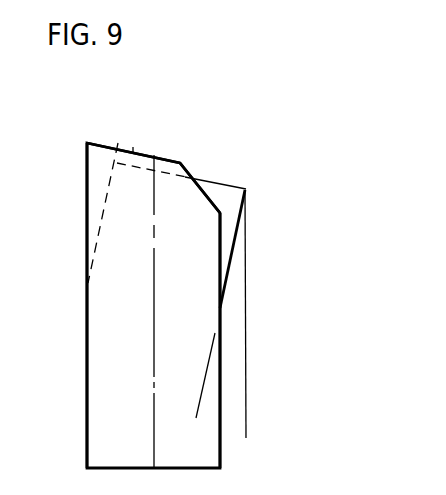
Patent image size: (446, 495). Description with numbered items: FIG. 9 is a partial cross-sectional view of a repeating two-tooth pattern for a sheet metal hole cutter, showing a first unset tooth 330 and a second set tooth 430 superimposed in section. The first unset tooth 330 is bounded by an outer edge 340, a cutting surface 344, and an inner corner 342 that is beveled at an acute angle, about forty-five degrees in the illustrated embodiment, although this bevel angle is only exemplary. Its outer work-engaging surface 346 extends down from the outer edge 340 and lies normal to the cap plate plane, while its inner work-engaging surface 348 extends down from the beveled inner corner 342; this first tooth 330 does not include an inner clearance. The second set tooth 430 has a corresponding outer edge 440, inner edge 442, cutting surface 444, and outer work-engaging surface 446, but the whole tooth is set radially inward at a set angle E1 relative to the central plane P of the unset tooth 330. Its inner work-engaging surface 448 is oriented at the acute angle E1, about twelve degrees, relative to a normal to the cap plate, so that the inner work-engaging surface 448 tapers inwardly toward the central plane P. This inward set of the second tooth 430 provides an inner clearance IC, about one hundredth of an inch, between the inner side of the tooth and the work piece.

The first unset tooth 330 is at (156, 149).
The outer edge 340 is at (87, 143).
The inner corner 342 is at (182, 160).
The cutting surface 344 is at (133, 150).
The outer work-engaging surface 346 is at (87, 233).
The inner work-engaging surface 348 is at (220, 258).
The second set tooth 430 is at (240, 171).
The outer edge 440 is at (118, 143).
The inner edge 442 is at (247, 188).
The cutting surface 444 is at (218, 182).
The outer work-engaging surface 446 is at (105, 212).
The inner work-engaging surface 448 is at (236, 233).
The central plane P is at (199, 392).
The set angle E1 is at (248, 397).
The inner clearance IC is at (190, 430).